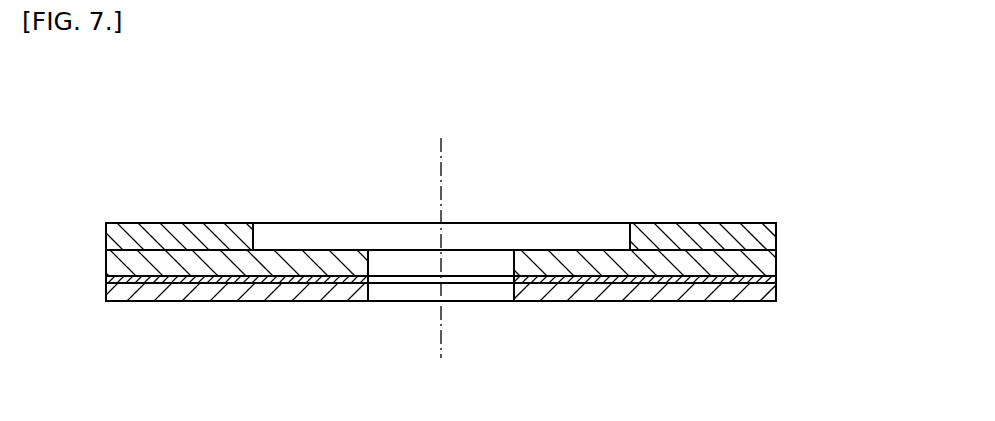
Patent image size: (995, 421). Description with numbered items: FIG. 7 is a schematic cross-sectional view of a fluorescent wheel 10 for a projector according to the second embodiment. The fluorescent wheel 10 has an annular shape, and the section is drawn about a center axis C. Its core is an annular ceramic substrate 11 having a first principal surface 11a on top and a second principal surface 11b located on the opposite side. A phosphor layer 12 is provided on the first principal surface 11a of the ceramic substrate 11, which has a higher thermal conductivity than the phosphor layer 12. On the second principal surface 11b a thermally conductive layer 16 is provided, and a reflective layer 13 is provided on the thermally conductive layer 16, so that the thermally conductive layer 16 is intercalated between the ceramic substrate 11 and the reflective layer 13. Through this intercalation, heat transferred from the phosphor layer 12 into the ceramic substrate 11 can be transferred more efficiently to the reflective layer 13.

The fluorescent wheel 10 is at (722, 143).
The ceramic substrate 11 is at (777, 260).
The first principal surface 11a is at (586, 250).
The second principal surface 11b is at (608, 301).
The phosphor layer 12 is at (732, 222).
The reflective layer 13 is at (777, 292).
The thermally conductive layer 16 is at (777, 278).
The center axis C is at (442, 166).